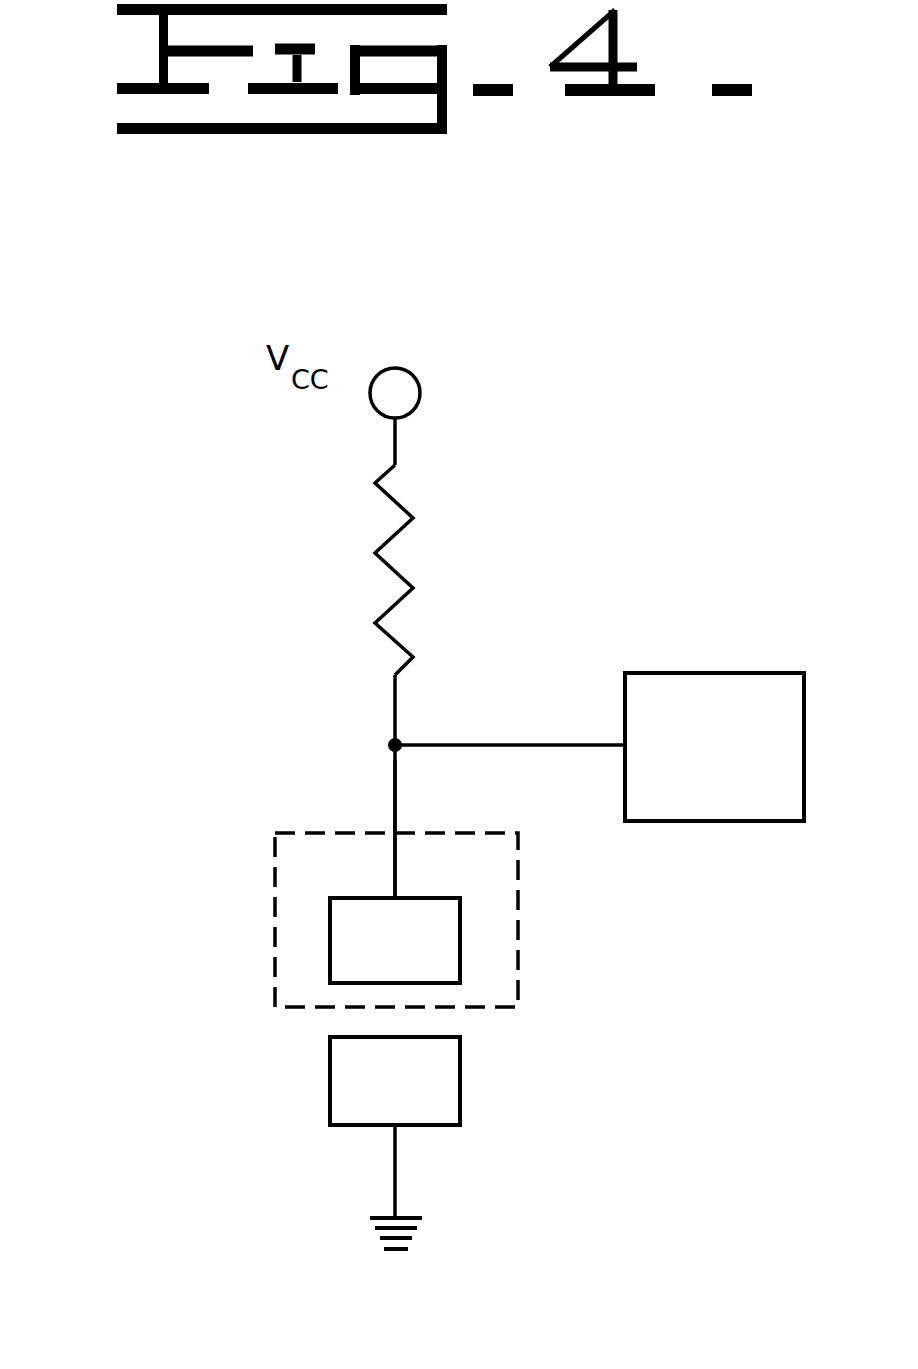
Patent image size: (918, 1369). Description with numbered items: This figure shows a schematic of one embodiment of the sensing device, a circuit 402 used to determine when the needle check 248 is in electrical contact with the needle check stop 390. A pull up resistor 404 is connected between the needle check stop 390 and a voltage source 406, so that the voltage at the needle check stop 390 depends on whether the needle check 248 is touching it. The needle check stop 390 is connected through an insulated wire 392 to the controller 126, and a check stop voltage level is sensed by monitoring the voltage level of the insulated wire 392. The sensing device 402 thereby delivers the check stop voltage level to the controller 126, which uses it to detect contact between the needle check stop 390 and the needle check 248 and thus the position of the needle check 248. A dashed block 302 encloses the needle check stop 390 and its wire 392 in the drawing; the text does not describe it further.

The circuit 402 is at (95, 524).
The voltage source 406 is at (420, 392).
The pull up resistor 404 is at (407, 572).
The controller 126 is at (685, 673).
The sensor assembly 302 is at (273, 885).
The insulated wire 392 is at (395, 850).
The needle check stop 390 is at (430, 962).
The needle check 248 is at (430, 1102).